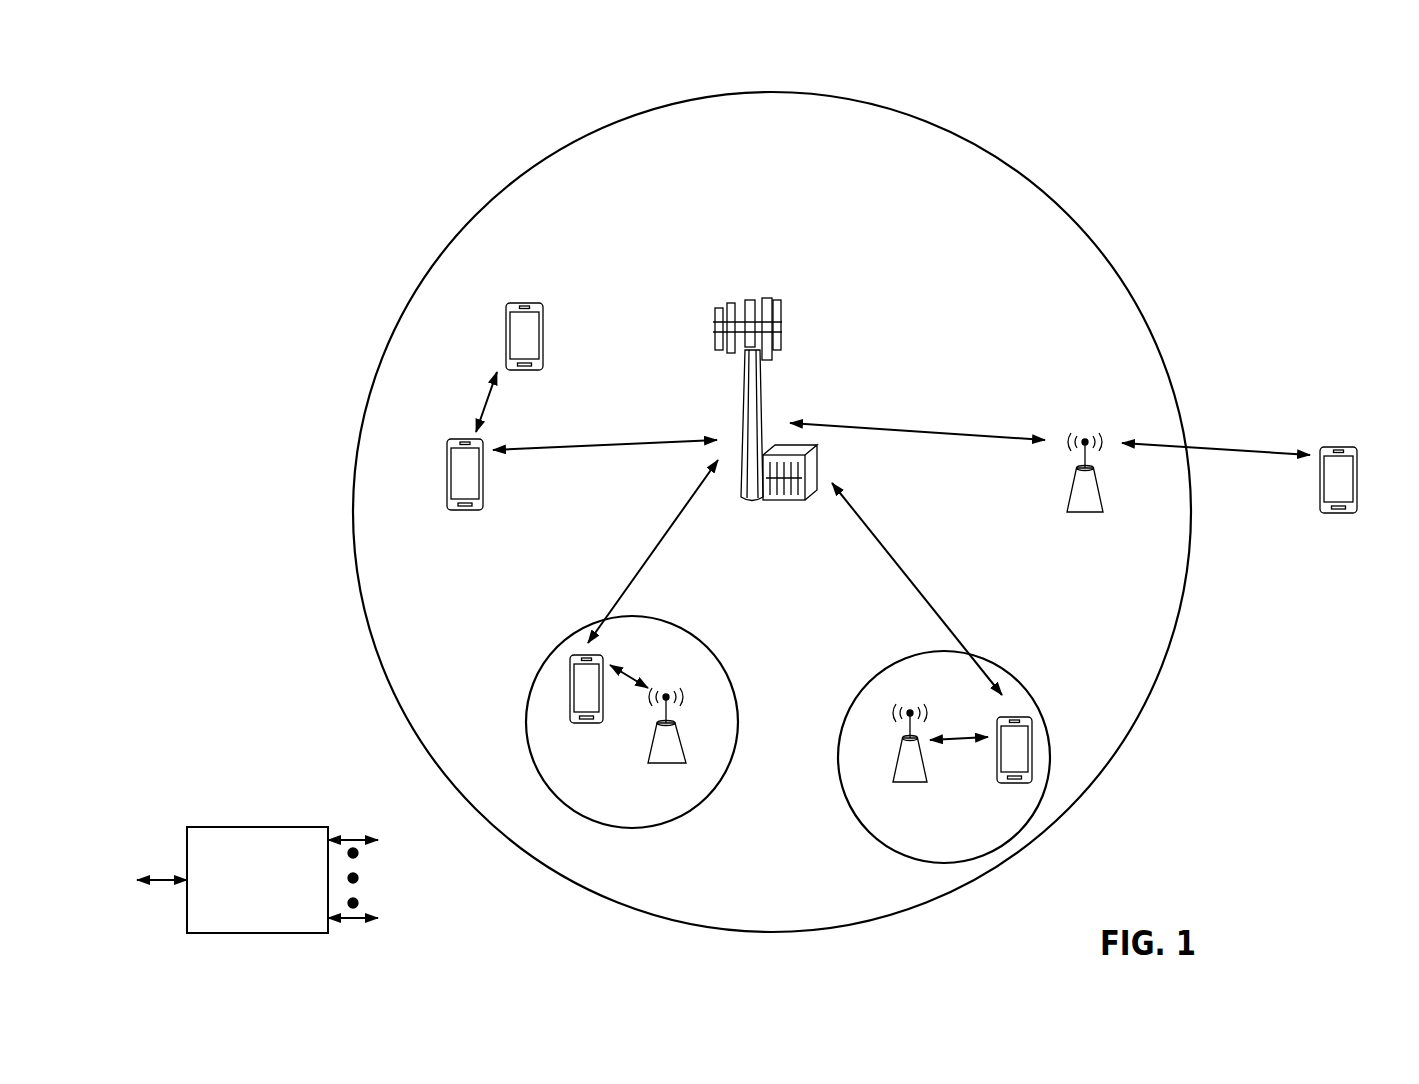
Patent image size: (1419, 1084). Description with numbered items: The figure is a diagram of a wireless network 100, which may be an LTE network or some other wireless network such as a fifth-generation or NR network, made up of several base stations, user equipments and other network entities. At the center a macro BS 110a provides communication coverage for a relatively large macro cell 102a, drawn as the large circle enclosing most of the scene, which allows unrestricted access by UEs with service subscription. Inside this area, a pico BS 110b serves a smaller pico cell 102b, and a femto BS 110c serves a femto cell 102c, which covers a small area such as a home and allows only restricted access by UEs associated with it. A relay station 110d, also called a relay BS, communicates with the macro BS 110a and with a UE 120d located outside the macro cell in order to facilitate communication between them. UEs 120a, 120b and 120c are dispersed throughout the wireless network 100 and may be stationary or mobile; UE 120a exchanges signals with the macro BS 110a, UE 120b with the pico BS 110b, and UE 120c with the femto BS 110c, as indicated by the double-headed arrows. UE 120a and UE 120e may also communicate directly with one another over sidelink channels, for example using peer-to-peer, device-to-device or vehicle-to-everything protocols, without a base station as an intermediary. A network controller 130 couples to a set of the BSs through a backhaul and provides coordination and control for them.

The wireless network 100 is at (230, 72).
The macro cell 102a is at (1048, 198).
The pico cell 102b is at (723, 655).
The femto cell 102c is at (885, 672).
The macro BS 110a is at (758, 290).
The pico BS 110b is at (686, 746).
The femto BS 110c is at (893, 763).
The relay station 110d is at (1087, 432).
The UE 120a is at (447, 460).
The UE 120b is at (580, 725).
The UE 120c is at (1005, 785).
The UE 120d is at (1346, 447).
The UE 120e is at (507, 322).
The network controller 130 is at (258, 827).